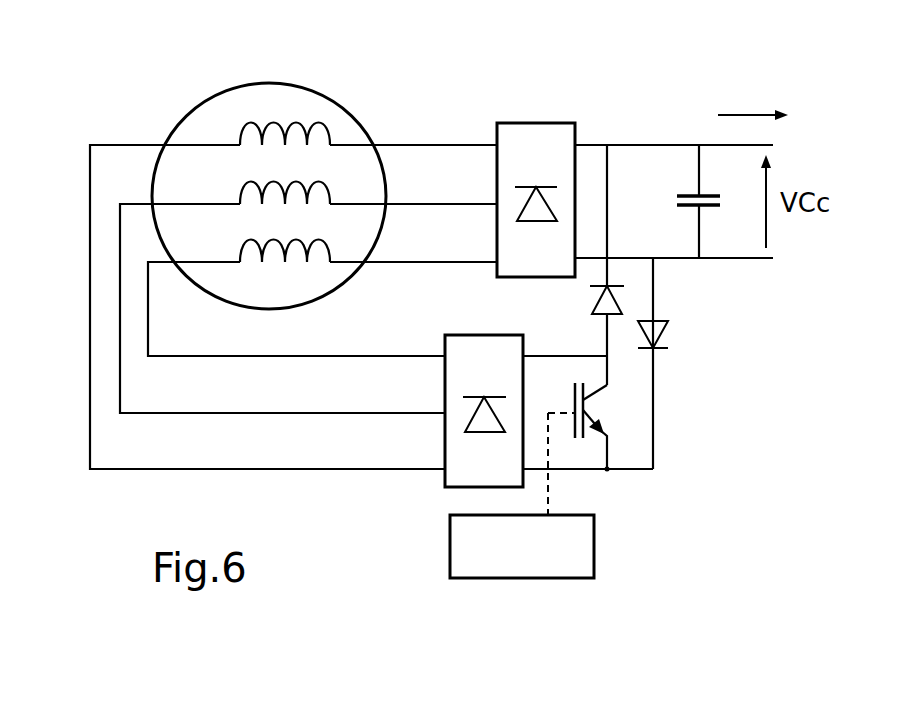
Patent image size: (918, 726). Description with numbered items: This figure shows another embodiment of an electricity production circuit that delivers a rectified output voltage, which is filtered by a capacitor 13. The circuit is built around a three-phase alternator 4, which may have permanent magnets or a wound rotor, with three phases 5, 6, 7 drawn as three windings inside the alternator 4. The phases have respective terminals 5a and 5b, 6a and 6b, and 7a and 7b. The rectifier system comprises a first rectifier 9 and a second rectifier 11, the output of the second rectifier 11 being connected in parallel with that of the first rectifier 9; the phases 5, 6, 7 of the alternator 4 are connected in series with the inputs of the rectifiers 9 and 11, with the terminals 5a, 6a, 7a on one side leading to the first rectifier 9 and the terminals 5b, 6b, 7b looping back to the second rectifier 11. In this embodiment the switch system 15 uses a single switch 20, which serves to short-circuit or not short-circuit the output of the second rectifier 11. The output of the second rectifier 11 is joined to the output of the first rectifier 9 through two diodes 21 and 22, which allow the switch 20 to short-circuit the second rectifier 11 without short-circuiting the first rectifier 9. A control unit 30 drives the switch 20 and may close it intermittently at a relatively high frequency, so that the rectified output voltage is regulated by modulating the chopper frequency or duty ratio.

The three-phase alternator 4 is at (265, 85).
The phase 5 is at (250, 127).
The terminal 5a is at (342, 145).
The terminal 5b is at (212, 145).
The phase 6 is at (325, 185).
The terminal 6a is at (387, 207).
The terminal 6b is at (187, 200).
The phase 7 is at (295, 252).
The terminal 7a is at (337, 262).
The terminal 7b is at (223, 262).
The first rectifier 9 is at (542, 137).
The second rectifier 11 is at (480, 340).
The capacitor 13 is at (707, 207).
The switch system 15 is at (611, 478).
The switch 20 is at (585, 405).
The diode 21 is at (612, 298).
The diode 22 is at (667, 333).
The control unit 30 is at (465, 532).